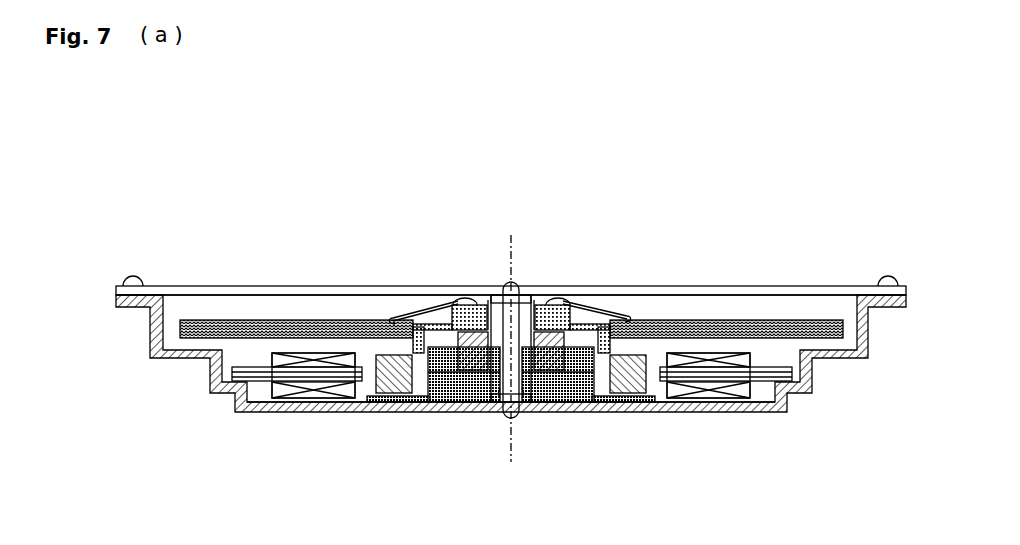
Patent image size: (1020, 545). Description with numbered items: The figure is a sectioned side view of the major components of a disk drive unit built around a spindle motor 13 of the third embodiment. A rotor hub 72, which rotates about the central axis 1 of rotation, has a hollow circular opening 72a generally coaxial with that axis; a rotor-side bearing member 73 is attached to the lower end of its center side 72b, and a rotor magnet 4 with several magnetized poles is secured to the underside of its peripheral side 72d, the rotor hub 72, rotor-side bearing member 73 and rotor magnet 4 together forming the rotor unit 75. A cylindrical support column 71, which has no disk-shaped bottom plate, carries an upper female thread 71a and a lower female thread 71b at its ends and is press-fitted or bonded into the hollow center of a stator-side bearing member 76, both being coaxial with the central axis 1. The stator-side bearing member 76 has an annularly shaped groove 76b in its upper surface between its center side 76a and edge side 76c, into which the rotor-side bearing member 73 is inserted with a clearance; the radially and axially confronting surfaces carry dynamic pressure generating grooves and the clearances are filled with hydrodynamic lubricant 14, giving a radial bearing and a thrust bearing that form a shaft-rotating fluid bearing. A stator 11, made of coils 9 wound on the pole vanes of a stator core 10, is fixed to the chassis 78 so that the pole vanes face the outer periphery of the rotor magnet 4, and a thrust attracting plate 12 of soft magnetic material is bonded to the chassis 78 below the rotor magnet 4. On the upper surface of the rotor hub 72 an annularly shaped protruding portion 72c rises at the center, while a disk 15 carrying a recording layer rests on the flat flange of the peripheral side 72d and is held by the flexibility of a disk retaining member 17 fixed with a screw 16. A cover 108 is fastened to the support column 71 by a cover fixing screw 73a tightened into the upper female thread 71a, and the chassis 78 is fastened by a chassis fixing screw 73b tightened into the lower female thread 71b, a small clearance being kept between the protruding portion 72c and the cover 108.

The central axis of rotation 1 is at (513, 283).
The rotor magnet 4 is at (367, 320).
The coils 9 is at (343, 388).
The stator core 10 is at (250, 378).
The stator 11 is at (318, 452).
The thrust attracting plate 12 is at (392, 399).
The spindle motor 13 is at (177, 403).
The hydrodynamic lubricant 14 is at (587, 412).
The disk 15 is at (307, 322).
The screw 16 is at (565, 297).
The disk retaining member 17 is at (598, 308).
The support column 71 is at (552, 412).
The upper female thread 71a is at (523, 307).
The lower female thread 71b is at (522, 412).
The rotor hub 72 is at (565, 160).
The hollow circular opening 72a is at (488, 298).
The center side 72b is at (455, 305).
The annularly shaped protruding portion 72c is at (488, 305).
The peripheral side 72d is at (393, 314).
The rotor-side bearing member 73 is at (450, 318).
The cover fixing screw 73a is at (517, 295).
The chassis fixing screw 73b is at (513, 415).
The rotor unit 75 is at (463, 117).
The stator-side bearing member 76 is at (507, 484).
The center side 76a is at (488, 413).
The annularly shaped groove 76b is at (452, 400).
The edge side 76c is at (412, 405).
The chassis 78 is at (668, 412).
The cover 108 is at (765, 293).